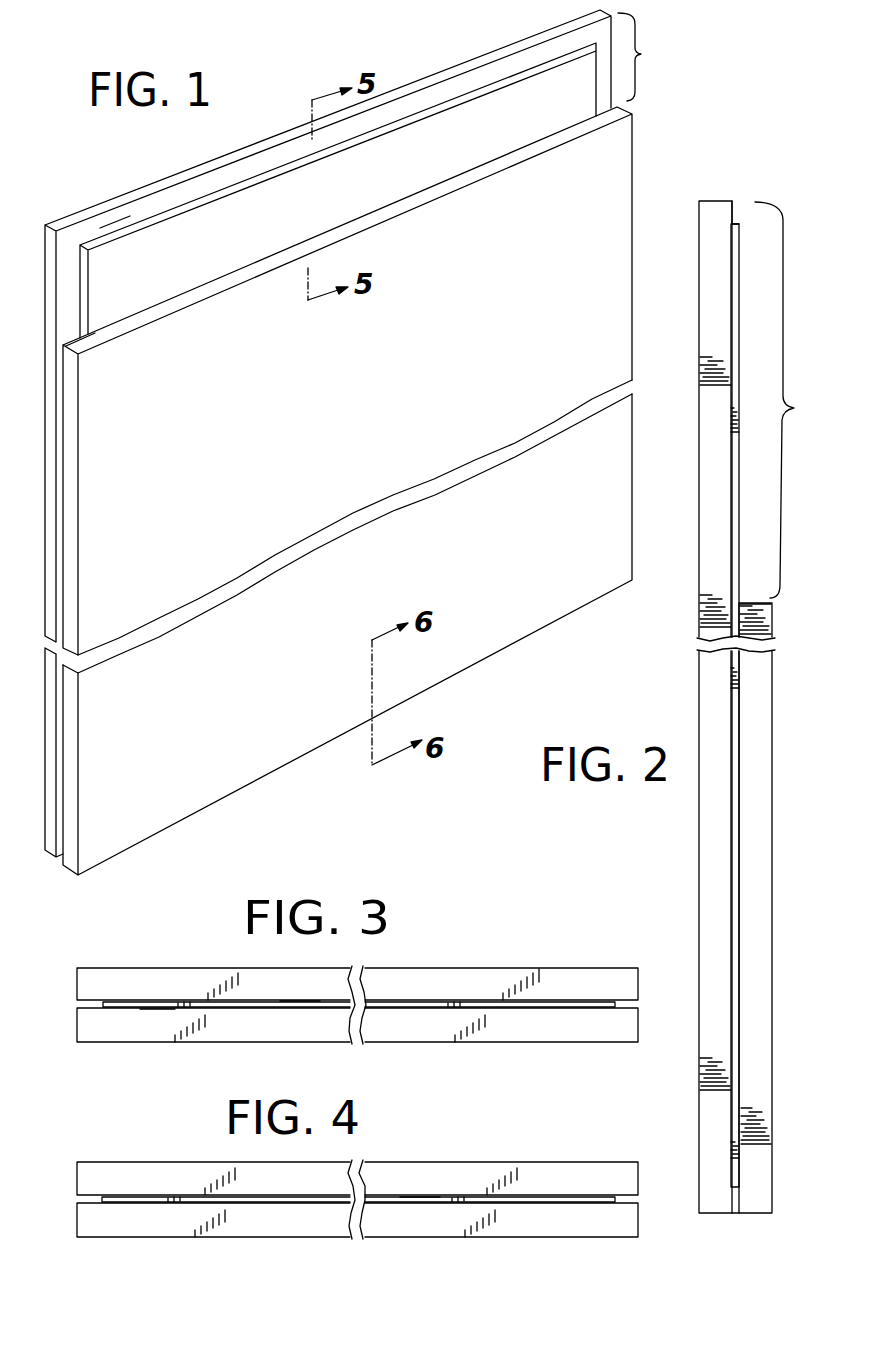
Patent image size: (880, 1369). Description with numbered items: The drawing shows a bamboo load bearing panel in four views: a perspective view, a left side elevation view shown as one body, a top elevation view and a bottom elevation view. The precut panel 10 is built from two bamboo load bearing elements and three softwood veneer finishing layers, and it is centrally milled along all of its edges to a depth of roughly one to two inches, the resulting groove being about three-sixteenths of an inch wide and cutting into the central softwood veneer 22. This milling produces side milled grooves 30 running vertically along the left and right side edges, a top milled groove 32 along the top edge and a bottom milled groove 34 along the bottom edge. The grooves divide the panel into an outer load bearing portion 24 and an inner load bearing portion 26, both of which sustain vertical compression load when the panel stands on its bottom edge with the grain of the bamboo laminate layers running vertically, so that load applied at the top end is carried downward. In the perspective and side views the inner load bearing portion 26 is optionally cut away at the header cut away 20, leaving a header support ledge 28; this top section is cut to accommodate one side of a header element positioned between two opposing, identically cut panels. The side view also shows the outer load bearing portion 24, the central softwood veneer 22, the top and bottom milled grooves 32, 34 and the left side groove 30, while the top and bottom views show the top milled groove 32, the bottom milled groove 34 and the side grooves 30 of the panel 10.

In FIG. 1, the precut panel 10 is at (650, 133).
In FIG. 2, the precut panel 10 is at (685, 812).
In FIG. 3, the precut panel 10 is at (524, 958).
In FIG. 4, the precut panel 10 is at (551, 1109).
In FIG. 1, the header cut away 20 is at (648, 57).
In FIG. 2, the header cut away 20 is at (793, 400).
In FIG. 1, the central softwood veneer 22 is at (483, 110).
In FIG. 2, the central softwood veneer 22 is at (735, 477).
In FIG. 3, the central softwood veneer 22 is at (136, 1006).
In FIG. 4, the central softwood veneer 22 is at (146, 1197).
In FIG. 1, the outer load bearing portion 24 is at (583, 22).
In FIG. 2, the outer load bearing portion 24 is at (716, 200).
In FIG. 3, the outer load bearing portion 24 is at (594, 980).
In FIG. 4, the outer load bearing portion 24 is at (357, 1178).
In FIG. 1, the inner load bearing portion 26 is at (612, 186).
In FIG. 2, the inner load bearing portion 26 is at (765, 700).
In FIG. 3, the inner load bearing portion 26 is at (597, 1031).
In FIG. 4, the inner load bearing portion 26 is at (357, 1220).
In FIG. 1, the header support ledge 28 is at (89, 344).
In FIG. 2, the header support ledge 28 is at (757, 602).
In FIG. 3, the header support ledge 28 is at (158, 1028).
In FIG. 1, the side milled grooves 30 is at (57, 538).
In FIG. 2, the side milled grooves 30 is at (739, 805).
In FIG. 3, the side milled grooves 30 is at (80, 1003).
In FIG. 4, the side milled grooves 30 is at (78, 1198).
In FIG. 1, the top milled groove 32 is at (113, 229).
In FIG. 2, the top milled groove 32 is at (738, 214).
In FIG. 3, the top milled groove 32 is at (295, 1006).
In FIG. 2, the bottom milled groove 34 is at (735, 1213).
In FIG. 4, the bottom milled groove 34 is at (418, 1197).